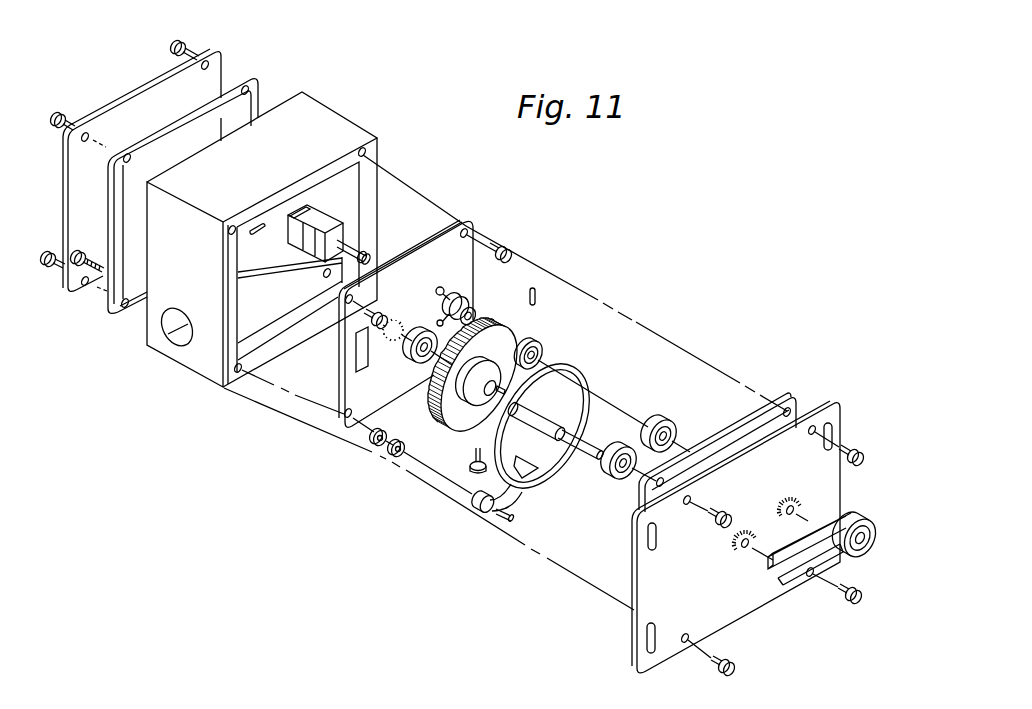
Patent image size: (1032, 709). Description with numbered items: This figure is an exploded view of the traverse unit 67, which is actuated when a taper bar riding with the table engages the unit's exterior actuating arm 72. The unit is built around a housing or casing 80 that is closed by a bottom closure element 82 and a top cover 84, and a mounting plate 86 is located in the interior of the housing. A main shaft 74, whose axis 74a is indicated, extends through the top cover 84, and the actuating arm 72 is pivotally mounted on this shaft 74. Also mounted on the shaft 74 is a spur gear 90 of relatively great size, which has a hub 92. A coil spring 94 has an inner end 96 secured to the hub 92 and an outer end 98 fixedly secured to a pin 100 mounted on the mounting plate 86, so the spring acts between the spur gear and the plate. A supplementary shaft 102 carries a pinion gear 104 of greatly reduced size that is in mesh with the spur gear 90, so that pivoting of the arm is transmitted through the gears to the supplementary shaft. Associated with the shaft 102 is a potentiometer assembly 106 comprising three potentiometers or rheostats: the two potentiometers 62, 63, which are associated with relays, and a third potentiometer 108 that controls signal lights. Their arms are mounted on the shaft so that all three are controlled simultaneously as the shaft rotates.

The bottom closure element 82 is at (141, 93).
The housing 80 is at (352, 122).
The potentiometer assembly 106 is at (304, 208).
The potentiometer 62 is at (315, 213).
The potentiometer 63 is at (343, 229).
The third potentiometer 108 is at (405, 199).
The supplementary shaft 102 is at (441, 236).
The mounting plate 86 is at (477, 275).
The traverse unit 67 is at (632, 235).
The pinion gear 104 is at (522, 340).
The top cover 84 is at (838, 425).
The actuating arm 72 is at (862, 516).
The shaft 74 is at (580, 458).
The axis 74a is at (815, 585).
The spur gear 90 is at (396, 473).
The hub 92 is at (476, 401).
The inner end 96 is at (470, 488).
The outer end 98 is at (476, 512).
The pin 100 is at (497, 513).
The coil spring 94 is at (541, 494).